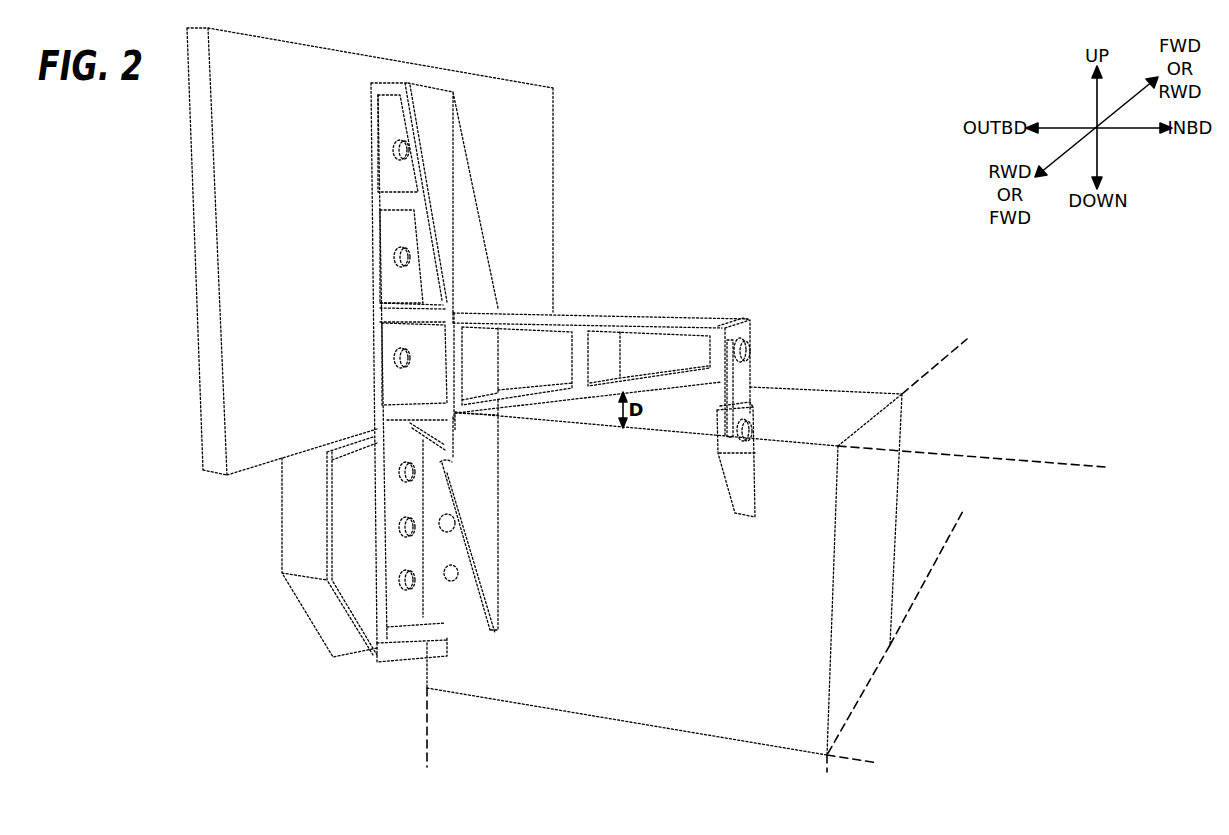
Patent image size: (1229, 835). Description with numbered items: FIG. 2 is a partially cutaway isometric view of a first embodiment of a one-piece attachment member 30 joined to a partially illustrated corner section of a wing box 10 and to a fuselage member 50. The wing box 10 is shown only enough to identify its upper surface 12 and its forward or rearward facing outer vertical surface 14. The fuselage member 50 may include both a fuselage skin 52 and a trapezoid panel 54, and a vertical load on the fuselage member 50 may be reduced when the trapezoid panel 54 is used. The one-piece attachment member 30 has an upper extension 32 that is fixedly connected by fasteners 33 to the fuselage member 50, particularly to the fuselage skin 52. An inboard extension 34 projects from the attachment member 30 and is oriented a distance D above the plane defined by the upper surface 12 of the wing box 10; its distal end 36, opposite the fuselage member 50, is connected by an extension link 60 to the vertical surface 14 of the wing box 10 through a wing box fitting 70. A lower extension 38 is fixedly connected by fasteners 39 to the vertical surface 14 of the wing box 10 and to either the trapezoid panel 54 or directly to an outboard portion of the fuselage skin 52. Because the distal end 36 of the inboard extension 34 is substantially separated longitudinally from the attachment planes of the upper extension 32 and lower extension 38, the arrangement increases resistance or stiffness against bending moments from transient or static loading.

The wing box 10 is at (766, 555).
The upper surface 12 is at (843, 410).
The outer vertical surface 14 is at (578, 595).
The one-piece attachment member 30 is at (478, 313).
The upper extension 32 is at (447, 177).
The fasteners 33 is at (403, 360).
The inboard extension 34 is at (587, 330).
The distal end 36 is at (741, 325).
The lower extension 38 is at (483, 580).
The fasteners 39 is at (452, 577).
The fuselage member 50 is at (148, 444).
The fuselage skin 52 is at (205, 218).
The trapezoid panel 54 is at (300, 523).
The extension link 60 is at (737, 378).
The wing box fitting 70 is at (747, 453).